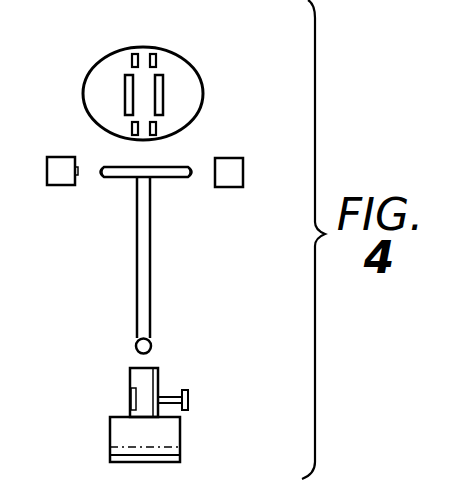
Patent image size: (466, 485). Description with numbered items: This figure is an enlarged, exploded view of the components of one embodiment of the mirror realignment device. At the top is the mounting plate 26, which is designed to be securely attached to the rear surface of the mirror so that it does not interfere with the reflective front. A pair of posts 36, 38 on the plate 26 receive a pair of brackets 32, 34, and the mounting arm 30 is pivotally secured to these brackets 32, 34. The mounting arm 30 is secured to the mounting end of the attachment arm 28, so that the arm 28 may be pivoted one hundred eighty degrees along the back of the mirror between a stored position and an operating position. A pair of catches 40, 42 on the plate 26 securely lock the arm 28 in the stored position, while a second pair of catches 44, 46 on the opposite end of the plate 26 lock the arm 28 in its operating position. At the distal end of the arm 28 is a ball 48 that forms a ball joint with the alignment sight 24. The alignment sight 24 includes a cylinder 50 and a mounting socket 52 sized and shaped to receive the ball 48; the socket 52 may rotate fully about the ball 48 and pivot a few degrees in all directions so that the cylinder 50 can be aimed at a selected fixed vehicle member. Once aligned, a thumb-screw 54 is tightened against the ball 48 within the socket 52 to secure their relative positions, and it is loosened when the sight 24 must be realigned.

The alignment sight 24 is at (434, 7).
The mounting plate 26 is at (182, 100).
The attachment arm 28 is at (143, 280).
The mounting arm 30 is at (167, 168).
The bracket 32 is at (58, 188).
The bracket 34 is at (232, 173).
The post 36 is at (122, 92).
The post 38 is at (165, 88).
The catch 40 is at (129, 57).
The catch 42 is at (158, 56).
The catch 44 is at (133, 128).
The catch 46 is at (152, 135).
The ball 48 is at (137, 347).
The cylinder 50 is at (120, 417).
The mounting socket 52 is at (143, 383).
The thumb-screw 54 is at (188, 398).